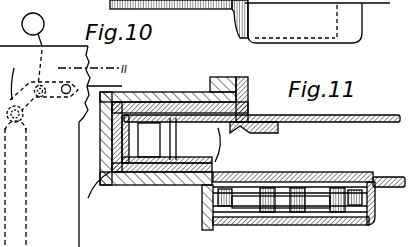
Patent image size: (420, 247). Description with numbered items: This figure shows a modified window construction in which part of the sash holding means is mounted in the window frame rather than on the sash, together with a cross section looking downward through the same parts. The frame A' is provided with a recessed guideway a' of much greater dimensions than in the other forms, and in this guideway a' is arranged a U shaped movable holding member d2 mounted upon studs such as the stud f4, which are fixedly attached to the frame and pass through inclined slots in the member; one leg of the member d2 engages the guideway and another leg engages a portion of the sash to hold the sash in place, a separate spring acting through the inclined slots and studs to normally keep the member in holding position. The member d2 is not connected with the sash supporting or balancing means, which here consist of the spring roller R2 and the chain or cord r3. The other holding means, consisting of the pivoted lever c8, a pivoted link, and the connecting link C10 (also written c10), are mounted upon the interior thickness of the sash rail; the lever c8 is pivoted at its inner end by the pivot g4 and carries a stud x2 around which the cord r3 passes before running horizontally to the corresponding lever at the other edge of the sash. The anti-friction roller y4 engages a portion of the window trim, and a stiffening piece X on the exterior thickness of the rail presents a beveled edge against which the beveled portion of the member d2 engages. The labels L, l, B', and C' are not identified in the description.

In FIG. 10, the spring roller R2 is at (42, 18).
In FIG. 10, the chain, cord or flexible material r3 is at (47, 35).
In FIG. 10, the stud x2 is at (46, 68).
In FIG. 11, the stud x2 is at (296, 195).
In FIG. 10, the pivoted lever c8 is at (29, 87).
In FIG. 11, the pivoted lever c8 is at (325, 213).
In FIG. 10, the pivot g4 is at (66, 94).
In FIG. 11, the pivot g4 is at (348, 212).
In FIG. 10, the anti-friction roller y4 is at (9, 76).
In FIG. 11, the anti-friction roller y4 is at (203, 190).
In FIG. 10, the connecting link C10 is at (20, 246).
In FIG. 11, the bracket L is at (179, 21).
In FIG. 11, the bracket slot l is at (326, 22).
In FIG. 11, the frame A' is at (174, 142).
In FIG. 11, the recessed guideway a' is at (153, 168).
In FIG. 11, the stiffening or strengthening piece X is at (268, 125).
In FIG. 11, the stud f4 is at (160, 143).
In FIG. 11, the U shaped movable holding member d2 is at (186, 164).
In FIG. 11, the cylinder housing B' is at (309, 188).
In FIG. 11, the piston C' is at (313, 217).
In FIG. 11, the connecting link c10 is at (219, 237).